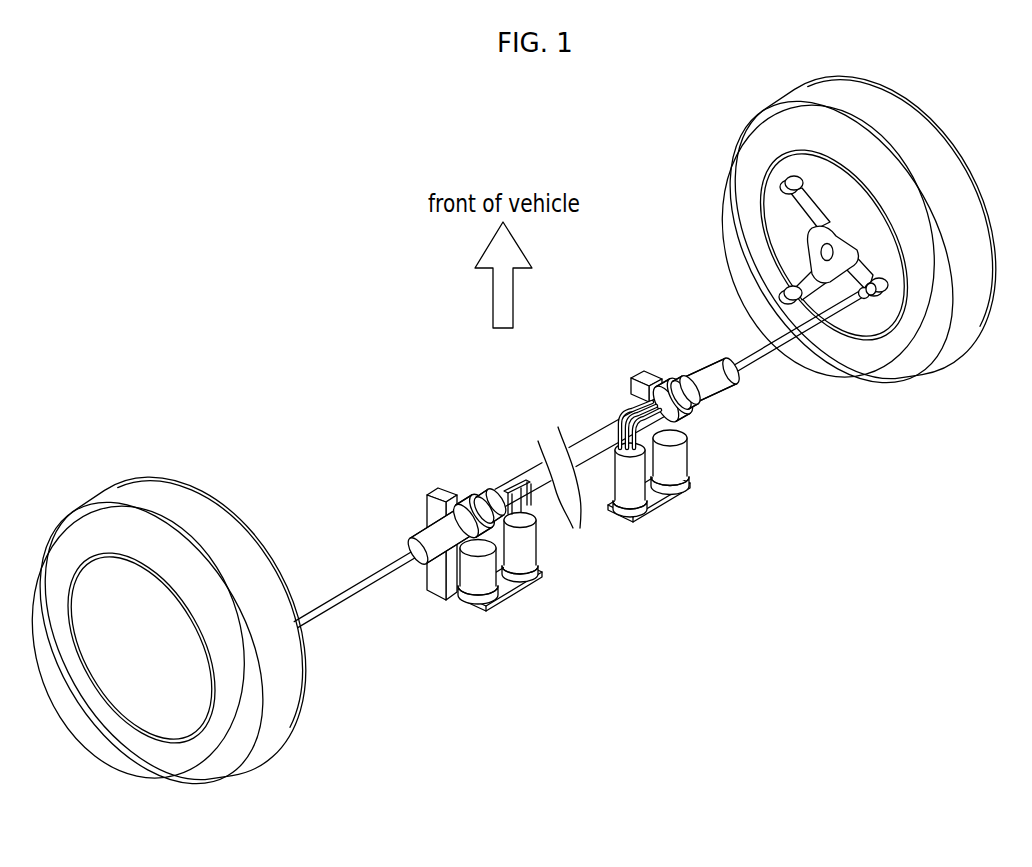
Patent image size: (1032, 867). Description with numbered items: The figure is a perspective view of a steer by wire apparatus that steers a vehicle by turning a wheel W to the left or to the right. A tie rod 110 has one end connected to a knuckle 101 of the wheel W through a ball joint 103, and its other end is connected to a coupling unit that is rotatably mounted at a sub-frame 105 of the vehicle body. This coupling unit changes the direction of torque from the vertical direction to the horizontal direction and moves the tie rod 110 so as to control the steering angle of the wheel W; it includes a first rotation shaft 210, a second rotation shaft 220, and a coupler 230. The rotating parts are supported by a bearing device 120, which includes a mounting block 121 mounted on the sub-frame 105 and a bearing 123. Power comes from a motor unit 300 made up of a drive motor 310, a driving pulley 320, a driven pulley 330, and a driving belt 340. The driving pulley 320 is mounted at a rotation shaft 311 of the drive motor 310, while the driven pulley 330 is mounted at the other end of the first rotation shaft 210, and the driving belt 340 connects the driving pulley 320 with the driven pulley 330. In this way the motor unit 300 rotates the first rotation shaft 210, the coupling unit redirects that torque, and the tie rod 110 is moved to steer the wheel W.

The wheel W is at (150, 483).
The knuckle 101 is at (788, 185).
The ball joint 103 is at (872, 298).
The sub-frame 105 is at (430, 587).
The tie rod 110 is at (312, 614).
The bearing device 120 is at (560, 435).
The mounting block 121 is at (452, 510).
The bearing 123 is at (478, 496).
The first rotation shaft 210 is at (647, 490).
The second rotation shaft 220 is at (433, 536).
The coupler 230 is at (520, 486).
The motor unit 300 is at (605, 565).
The drive motor 310 is at (579, 565).
The rotation shaft 311 is at (480, 600).
The driving pulley 320 is at (487, 607).
The driven pulley 330 is at (537, 572).
The driving belt 340 is at (520, 587).